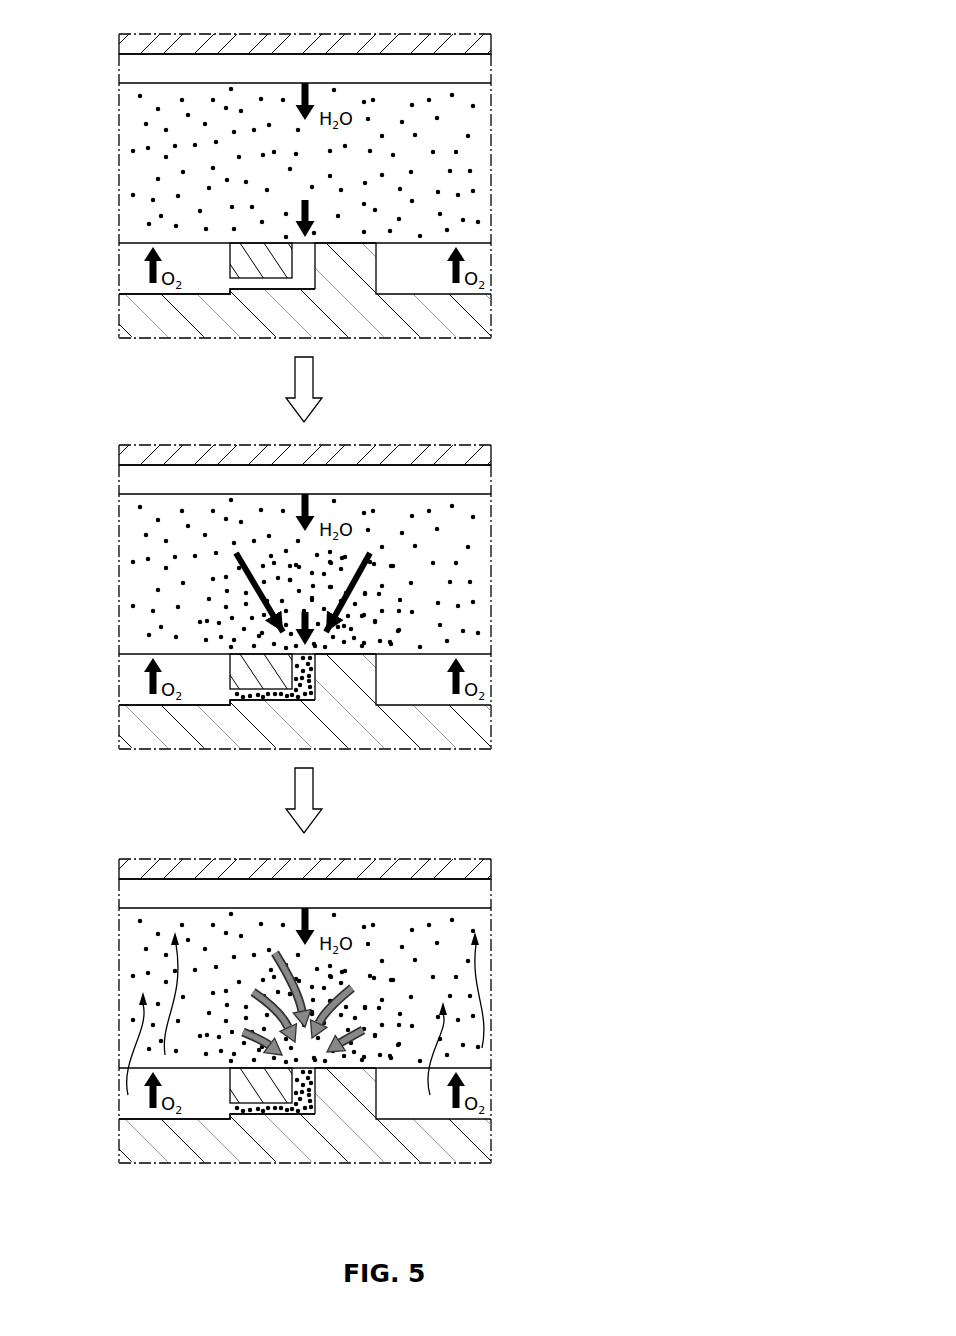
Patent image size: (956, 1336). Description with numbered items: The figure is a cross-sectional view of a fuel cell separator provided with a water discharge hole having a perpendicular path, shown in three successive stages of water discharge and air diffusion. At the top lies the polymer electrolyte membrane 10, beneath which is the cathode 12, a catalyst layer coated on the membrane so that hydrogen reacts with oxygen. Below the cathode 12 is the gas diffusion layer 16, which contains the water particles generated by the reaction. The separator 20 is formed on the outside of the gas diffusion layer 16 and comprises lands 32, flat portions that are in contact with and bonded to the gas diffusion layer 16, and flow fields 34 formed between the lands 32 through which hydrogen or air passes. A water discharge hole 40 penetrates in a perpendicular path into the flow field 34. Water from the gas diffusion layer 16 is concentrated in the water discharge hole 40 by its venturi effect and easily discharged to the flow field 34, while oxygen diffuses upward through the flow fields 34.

The polymer electrolyte membrane 10 is at (305, 456).
The cathode 12 is at (305, 481).
The gas diffusion layer 16 is at (305, 597).
The separator 20 is at (305, 703).
The land 32 is at (345, 678).
The flow field 34 is at (217, 704).
The water discharge hole 40 is at (261, 673).